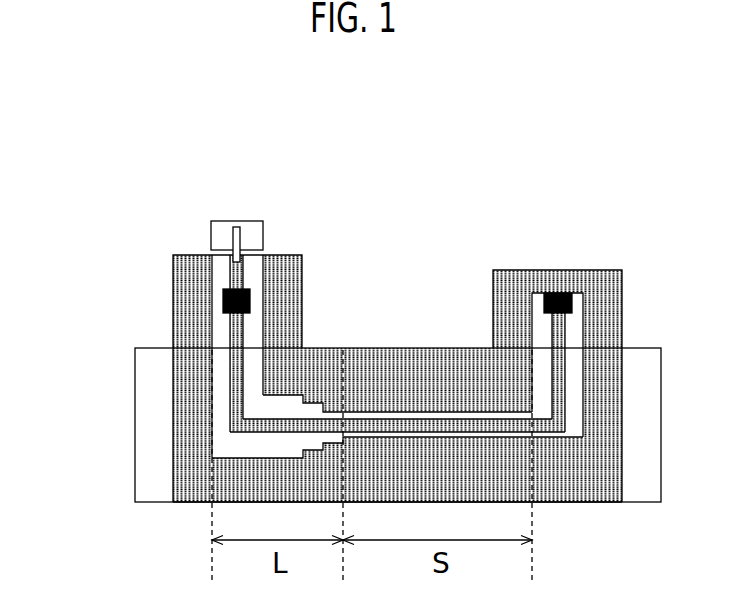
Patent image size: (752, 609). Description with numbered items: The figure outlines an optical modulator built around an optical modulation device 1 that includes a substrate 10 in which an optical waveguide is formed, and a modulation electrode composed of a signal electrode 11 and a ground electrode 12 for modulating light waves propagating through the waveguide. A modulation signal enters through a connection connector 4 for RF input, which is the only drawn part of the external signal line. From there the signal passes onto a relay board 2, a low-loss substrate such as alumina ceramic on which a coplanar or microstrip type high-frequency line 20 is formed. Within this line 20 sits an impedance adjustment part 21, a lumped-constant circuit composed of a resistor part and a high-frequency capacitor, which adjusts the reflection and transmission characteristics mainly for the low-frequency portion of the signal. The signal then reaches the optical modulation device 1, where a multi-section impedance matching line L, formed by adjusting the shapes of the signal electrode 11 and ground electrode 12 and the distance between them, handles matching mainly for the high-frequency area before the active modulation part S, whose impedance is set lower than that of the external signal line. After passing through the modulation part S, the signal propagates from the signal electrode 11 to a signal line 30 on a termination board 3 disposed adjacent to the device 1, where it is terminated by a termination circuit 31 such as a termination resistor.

The optical modulation device 1 is at (135, 482).
The relay board 2 is at (173, 278).
The termination board 3 is at (601, 270).
The connection connector 4 is at (264, 233).
The substrate 10 is at (148, 408).
The signal electrode 11 is at (243, 422).
The ground electrode 12 is at (560, 477).
The high-frequency line 20 is at (228, 323).
The impedance adjustment part 21 is at (251, 300).
The signal line 30 is at (555, 331).
The termination circuit 31 is at (572, 298).